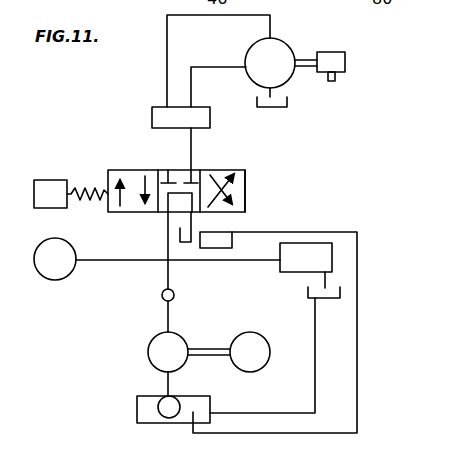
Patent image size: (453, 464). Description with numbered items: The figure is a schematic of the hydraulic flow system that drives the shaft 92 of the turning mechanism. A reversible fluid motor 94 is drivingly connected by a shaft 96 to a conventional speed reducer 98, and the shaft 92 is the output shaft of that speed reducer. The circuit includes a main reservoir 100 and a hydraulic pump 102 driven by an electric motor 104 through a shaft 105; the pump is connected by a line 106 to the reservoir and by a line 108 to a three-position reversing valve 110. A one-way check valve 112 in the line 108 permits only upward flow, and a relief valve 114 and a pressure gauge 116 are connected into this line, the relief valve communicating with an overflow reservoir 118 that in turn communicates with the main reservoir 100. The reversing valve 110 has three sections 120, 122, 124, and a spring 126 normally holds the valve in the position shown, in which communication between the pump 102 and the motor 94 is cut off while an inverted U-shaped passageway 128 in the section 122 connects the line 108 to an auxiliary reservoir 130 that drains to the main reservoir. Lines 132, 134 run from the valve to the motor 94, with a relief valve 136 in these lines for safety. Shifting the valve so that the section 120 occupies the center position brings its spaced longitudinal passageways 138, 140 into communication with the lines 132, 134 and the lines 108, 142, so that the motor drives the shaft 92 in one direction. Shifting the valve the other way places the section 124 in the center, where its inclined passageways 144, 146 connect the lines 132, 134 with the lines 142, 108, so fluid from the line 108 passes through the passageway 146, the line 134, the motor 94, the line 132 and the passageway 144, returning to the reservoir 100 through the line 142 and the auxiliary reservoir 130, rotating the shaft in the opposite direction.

The shaft 92 is at (336, 81).
The fluid motor 94 is at (281, 57).
The shaft 96 is at (304, 68).
The speed reducer 98 is at (337, 61).
The main reservoir 100 is at (143, 407).
The hydraulic pump 102 is at (174, 345).
The electric motor 104 is at (259, 343).
The shaft 105 is at (201, 356).
The line 106 is at (170, 389).
The line 108 is at (165, 268).
The reversing valve 110 is at (258, 192).
The one-way check valve 112 is at (175, 293).
The relief valve 114 is at (320, 265).
The pressure gauge 116 is at (55, 280).
The overflow reservoir 118 is at (330, 298).
The section 120 is at (163, 179).
The section 122 is at (195, 178).
The section 124 is at (246, 212).
The spring 126 is at (97, 204).
The inverted U-shaped passageway 128 is at (178, 207).
The reservoir 130 is at (224, 234).
The line 132 is at (165, 53).
The line 134 is at (227, 66).
The relief valve 136 is at (160, 107).
The passageway 138 is at (124, 204).
The passageway 140 is at (141, 203).
The line 142 is at (193, 223).
The passageway 144 is at (232, 170).
The passageway 146 is at (250, 195).